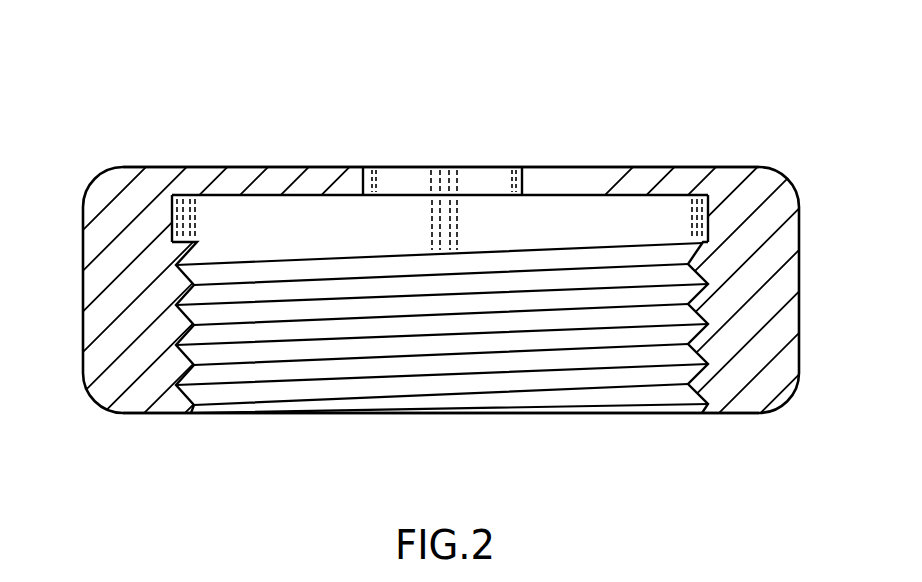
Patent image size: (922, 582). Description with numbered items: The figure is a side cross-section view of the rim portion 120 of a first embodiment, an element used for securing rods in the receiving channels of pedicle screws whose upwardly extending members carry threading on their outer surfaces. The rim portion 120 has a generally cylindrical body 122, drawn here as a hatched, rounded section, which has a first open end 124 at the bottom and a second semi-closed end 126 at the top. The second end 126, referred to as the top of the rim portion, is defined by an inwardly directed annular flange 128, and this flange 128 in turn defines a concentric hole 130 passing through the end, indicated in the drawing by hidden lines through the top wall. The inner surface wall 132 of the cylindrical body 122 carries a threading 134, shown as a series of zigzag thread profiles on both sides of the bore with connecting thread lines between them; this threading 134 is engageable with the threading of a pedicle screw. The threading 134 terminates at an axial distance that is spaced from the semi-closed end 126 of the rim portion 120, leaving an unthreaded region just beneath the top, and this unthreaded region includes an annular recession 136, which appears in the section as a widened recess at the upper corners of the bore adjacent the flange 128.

The rim portion 120 is at (667, 105).
The cylindrical body 122 is at (785, 248).
The first open end 124 is at (566, 413).
The second semi-closed end 126 is at (280, 162).
The inwardly directed annular flange 128 is at (330, 180).
The concentric hole 130 is at (468, 186).
The inner surface wall 132 is at (238, 333).
The threading 134 is at (180, 287).
The annular recession 136 is at (182, 219).